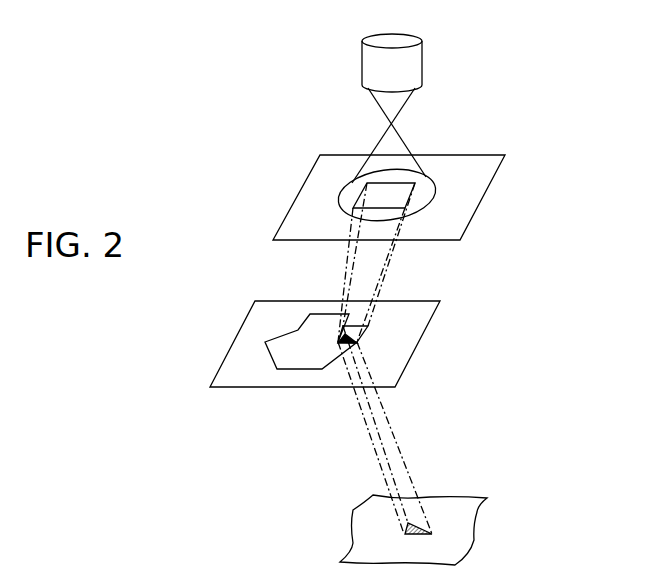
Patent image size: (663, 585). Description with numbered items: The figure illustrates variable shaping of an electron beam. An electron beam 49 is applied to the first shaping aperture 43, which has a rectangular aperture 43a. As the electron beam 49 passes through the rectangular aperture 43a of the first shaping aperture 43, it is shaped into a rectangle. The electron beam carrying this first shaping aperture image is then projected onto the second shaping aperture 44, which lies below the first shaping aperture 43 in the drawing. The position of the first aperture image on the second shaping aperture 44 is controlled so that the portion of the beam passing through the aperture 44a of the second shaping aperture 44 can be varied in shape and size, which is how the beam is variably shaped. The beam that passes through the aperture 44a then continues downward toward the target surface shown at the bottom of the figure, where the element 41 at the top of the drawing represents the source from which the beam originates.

The light source 41 is at (424, 60).
The electron beam 49 is at (375, 108).
The first shaping aperture 43 is at (480, 153).
The rectangular aperture 43a is at (397, 182).
The second shaping aperture 44 is at (433, 315).
The aperture 44a is at (303, 372).